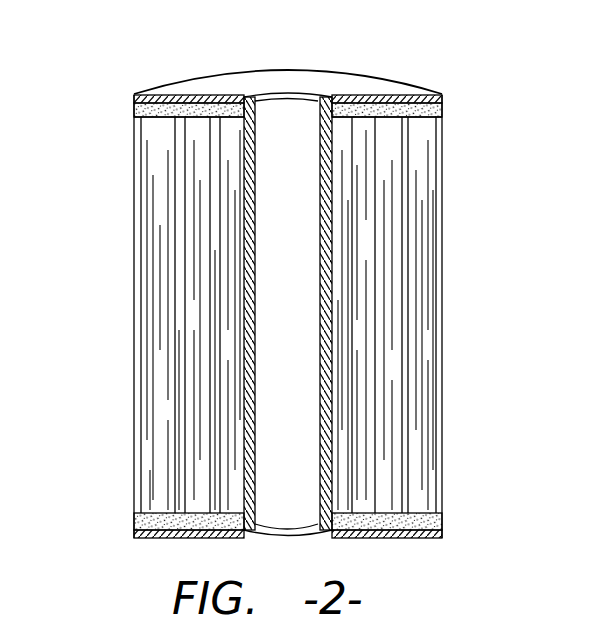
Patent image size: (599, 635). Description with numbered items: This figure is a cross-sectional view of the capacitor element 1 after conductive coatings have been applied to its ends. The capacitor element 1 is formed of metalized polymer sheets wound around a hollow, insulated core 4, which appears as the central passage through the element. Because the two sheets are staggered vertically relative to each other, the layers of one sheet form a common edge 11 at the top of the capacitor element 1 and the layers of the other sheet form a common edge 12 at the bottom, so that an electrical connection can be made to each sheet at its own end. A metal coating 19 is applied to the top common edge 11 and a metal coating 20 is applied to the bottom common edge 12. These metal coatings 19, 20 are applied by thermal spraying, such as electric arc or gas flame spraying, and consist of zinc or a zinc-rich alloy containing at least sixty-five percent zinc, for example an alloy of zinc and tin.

The capacitor element 1 is at (132, 299).
The hollow, insulated core 4 is at (293, 117).
The common edge 11 is at (153, 100).
The common edge 12 is at (157, 530).
The metal coating 19 is at (233, 75).
The metal coating 20 is at (420, 538).